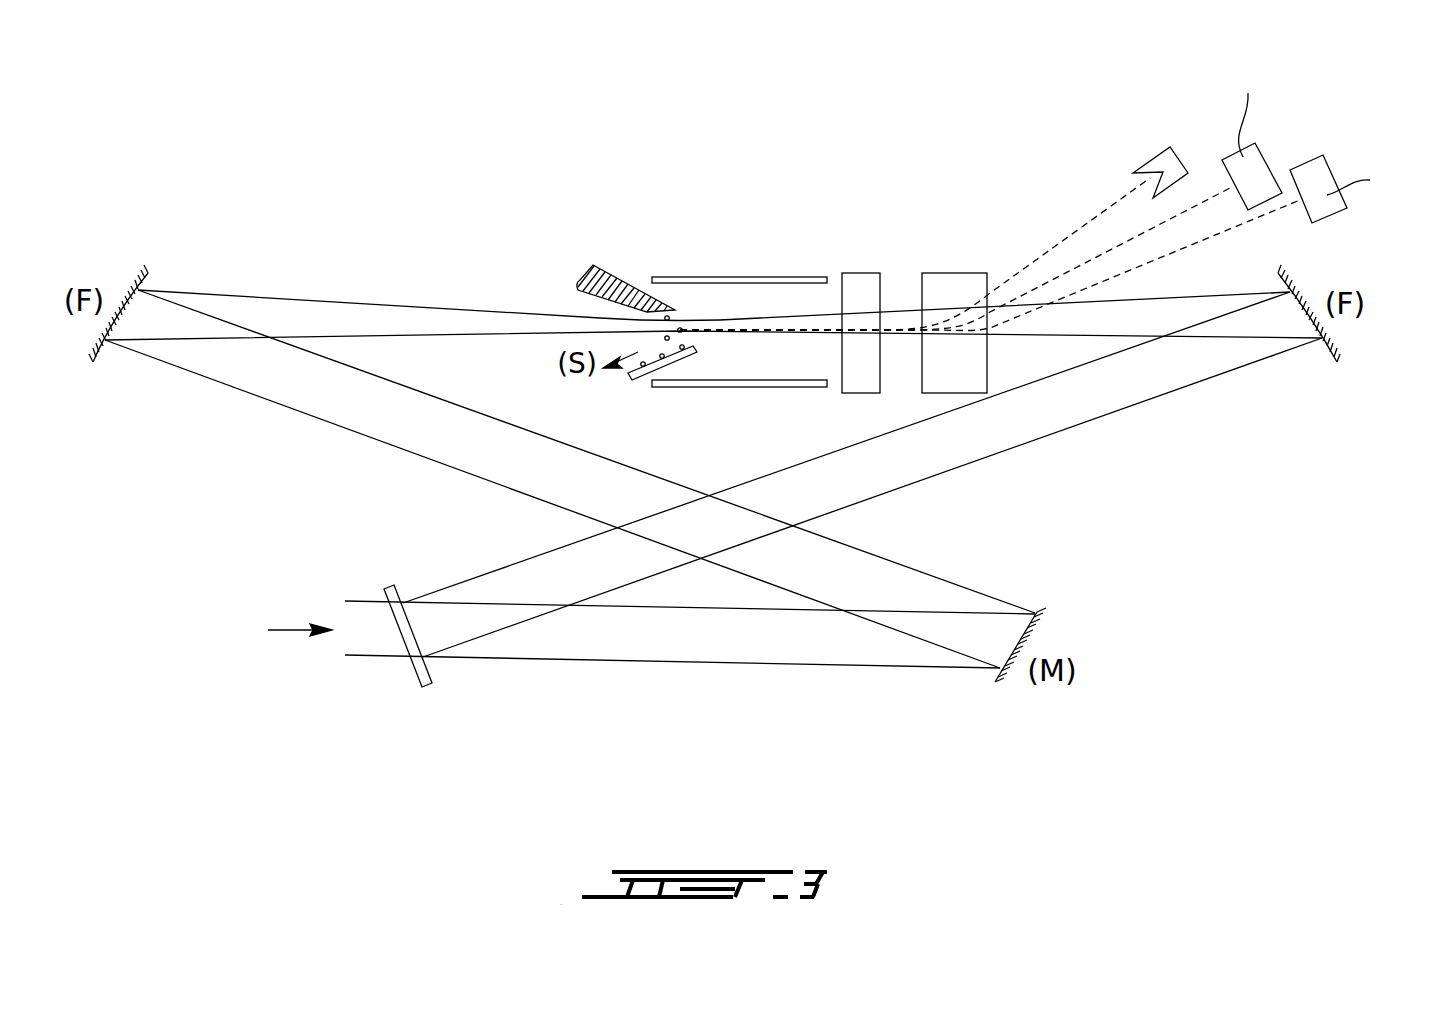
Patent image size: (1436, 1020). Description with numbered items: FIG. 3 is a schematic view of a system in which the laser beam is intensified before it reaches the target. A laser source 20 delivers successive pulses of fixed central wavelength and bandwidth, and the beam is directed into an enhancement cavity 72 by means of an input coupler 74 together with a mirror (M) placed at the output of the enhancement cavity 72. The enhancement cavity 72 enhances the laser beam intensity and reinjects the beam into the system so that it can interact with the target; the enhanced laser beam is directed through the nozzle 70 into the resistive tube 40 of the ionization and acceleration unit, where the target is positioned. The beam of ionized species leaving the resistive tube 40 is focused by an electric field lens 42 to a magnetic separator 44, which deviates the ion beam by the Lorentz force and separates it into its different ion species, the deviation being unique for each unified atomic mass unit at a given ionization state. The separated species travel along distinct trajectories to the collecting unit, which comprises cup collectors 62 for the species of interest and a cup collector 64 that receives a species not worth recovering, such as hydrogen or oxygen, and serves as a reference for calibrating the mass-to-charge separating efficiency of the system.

The laser source 20 is at (295, 629).
The resistive tube 40 is at (757, 233).
The electric field lens 42 is at (858, 393).
The magnetic separator 44 is at (957, 273).
The cup collectors 62 is at (1310, 203).
The cup collector 64 is at (1158, 158).
The nozzle 70 is at (626, 278).
The enhancement cavity 72 is at (731, 700).
The input coupler 74 is at (420, 676).